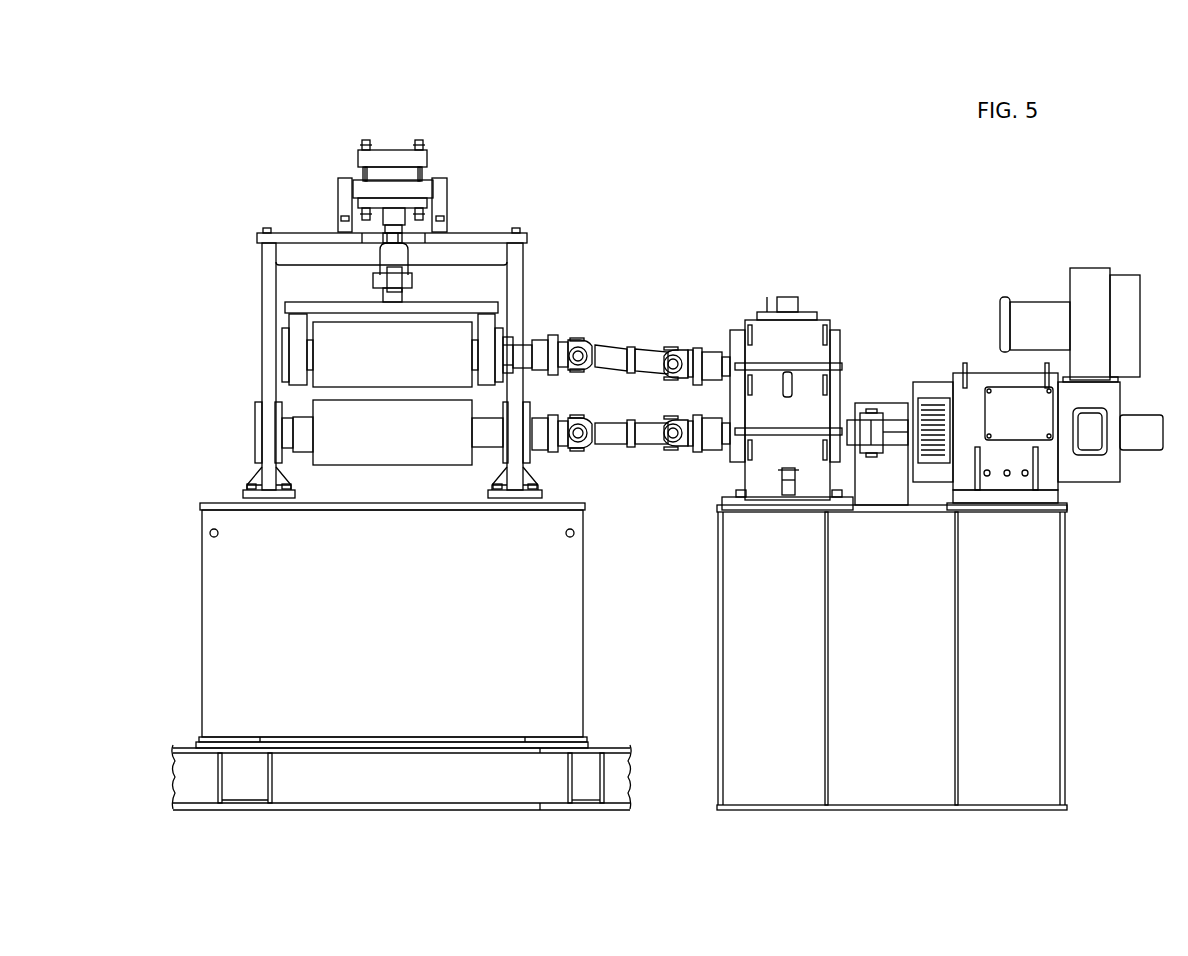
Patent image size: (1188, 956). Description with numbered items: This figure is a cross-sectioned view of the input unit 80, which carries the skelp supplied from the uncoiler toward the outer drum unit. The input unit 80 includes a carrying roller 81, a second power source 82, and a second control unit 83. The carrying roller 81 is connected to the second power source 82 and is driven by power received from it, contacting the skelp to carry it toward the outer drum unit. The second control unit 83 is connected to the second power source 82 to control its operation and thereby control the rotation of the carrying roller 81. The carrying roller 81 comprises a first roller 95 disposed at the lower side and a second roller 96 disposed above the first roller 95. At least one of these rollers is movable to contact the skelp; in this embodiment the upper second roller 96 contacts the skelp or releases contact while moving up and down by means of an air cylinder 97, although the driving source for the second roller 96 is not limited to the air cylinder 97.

The input unit 80 is at (215, 125).
The carrying roller 81 is at (198, 378).
The second power source 82 is at (815, 330).
The second control unit 83 is at (985, 376).
The first roller 95 is at (330, 433).
The second roller 96 is at (330, 352).
The air cylinder 97 is at (425, 185).